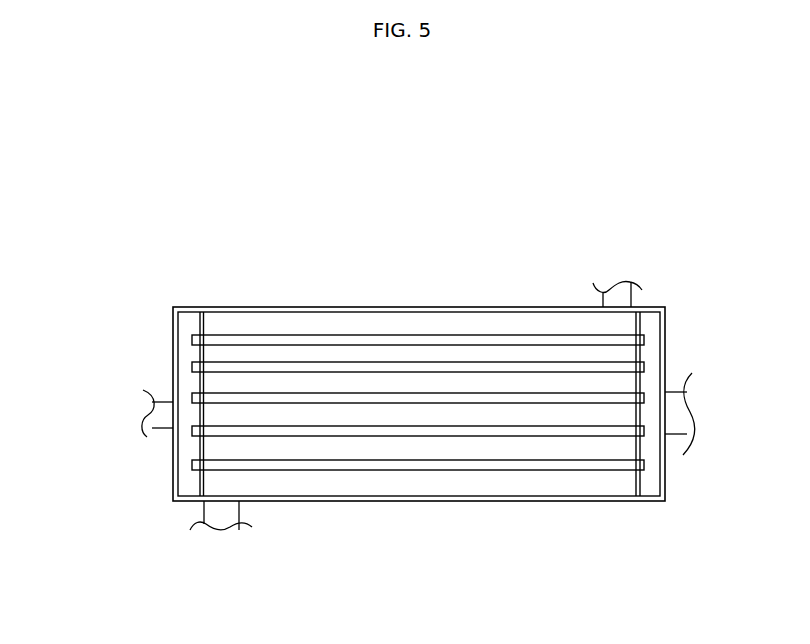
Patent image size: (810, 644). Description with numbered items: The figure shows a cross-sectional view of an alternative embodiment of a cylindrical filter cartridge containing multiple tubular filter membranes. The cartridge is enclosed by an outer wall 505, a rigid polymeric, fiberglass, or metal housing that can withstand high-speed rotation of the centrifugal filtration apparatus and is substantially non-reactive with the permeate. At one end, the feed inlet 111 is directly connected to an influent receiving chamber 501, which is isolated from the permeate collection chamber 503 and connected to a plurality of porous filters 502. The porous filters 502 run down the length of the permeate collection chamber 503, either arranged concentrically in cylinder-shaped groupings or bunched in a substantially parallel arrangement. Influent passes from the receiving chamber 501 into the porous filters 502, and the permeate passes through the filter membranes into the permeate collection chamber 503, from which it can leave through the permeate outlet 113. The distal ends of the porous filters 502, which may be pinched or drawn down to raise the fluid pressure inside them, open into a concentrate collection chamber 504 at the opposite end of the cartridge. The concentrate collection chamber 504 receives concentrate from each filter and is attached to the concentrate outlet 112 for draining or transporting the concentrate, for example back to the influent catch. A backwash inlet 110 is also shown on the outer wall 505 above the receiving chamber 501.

The outer wall 505 is at (230, 307).
The porous filter 502 is at (411, 335).
The backwash inlet 110 is at (618, 268).
The feed inlet 111 is at (729, 414).
The concentrate outlet 112 is at (95, 416).
The permeate outlet 113 is at (223, 554).
The concentrate collection chamber 504 is at (188, 482).
The permeate collection chamber 503 is at (423, 487).
The influent receiving chamber 501 is at (649, 487).